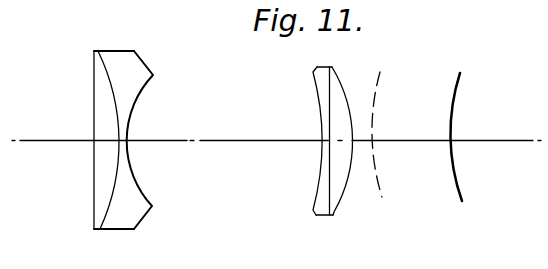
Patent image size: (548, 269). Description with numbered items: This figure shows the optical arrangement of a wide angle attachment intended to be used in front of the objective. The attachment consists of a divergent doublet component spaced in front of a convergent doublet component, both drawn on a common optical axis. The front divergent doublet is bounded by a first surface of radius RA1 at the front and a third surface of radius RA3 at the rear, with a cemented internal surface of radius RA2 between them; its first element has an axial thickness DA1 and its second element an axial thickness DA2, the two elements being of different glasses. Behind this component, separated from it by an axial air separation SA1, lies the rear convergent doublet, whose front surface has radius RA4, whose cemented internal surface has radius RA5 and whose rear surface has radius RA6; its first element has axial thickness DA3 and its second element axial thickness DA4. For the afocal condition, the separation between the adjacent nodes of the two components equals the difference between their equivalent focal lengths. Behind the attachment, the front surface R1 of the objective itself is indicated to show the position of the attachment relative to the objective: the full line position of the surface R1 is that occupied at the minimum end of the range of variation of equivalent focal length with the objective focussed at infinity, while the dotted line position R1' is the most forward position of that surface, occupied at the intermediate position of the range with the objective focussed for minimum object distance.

The radius of the first surface of the front divergent doublet RA1 is at (94, 103).
The radius of the second (cemented) surface of the front divergent doublet RA2 is at (107, 73).
The radius of the third surface of the front divergent doublet RA3 is at (138, 98).
The axial thickness of the first element of the front doublet DA1 is at (107, 143).
The axial thickness of the second element of the front doublet DA2 is at (121, 143).
The air separation between the front and rear components SA1 is at (250, 142).
The radius of the fourth surface (front of the rear convergent doublet) RA4 is at (315, 78).
The radius of the fifth (cemented) surface of the rear convergent doublet RA5 is at (328, 100).
The radius of the sixth surface of the rear convergent doublet RA6 is at (338, 80).
The axial thickness of the first element of the rear doublet DA3 is at (323, 144).
The axial thickness of the second element of the rear doublet DA4 is at (341, 146).
The dotted-line (most forward) position of the objective front surface R1' is at (397, 126).
The front surface of the objective R1 is at (447, 129).